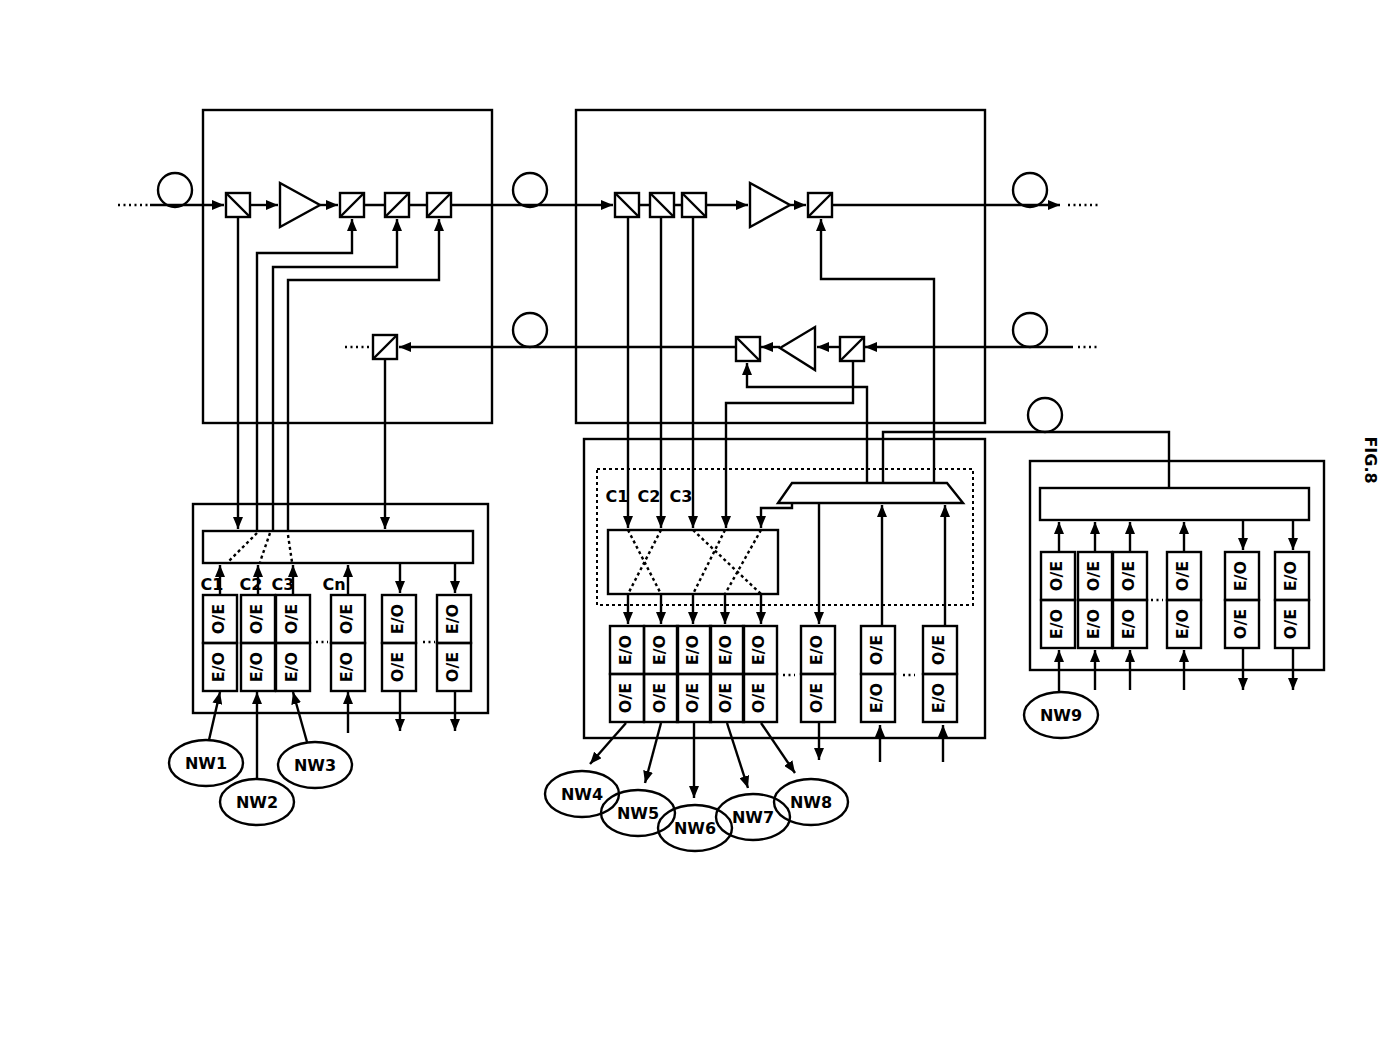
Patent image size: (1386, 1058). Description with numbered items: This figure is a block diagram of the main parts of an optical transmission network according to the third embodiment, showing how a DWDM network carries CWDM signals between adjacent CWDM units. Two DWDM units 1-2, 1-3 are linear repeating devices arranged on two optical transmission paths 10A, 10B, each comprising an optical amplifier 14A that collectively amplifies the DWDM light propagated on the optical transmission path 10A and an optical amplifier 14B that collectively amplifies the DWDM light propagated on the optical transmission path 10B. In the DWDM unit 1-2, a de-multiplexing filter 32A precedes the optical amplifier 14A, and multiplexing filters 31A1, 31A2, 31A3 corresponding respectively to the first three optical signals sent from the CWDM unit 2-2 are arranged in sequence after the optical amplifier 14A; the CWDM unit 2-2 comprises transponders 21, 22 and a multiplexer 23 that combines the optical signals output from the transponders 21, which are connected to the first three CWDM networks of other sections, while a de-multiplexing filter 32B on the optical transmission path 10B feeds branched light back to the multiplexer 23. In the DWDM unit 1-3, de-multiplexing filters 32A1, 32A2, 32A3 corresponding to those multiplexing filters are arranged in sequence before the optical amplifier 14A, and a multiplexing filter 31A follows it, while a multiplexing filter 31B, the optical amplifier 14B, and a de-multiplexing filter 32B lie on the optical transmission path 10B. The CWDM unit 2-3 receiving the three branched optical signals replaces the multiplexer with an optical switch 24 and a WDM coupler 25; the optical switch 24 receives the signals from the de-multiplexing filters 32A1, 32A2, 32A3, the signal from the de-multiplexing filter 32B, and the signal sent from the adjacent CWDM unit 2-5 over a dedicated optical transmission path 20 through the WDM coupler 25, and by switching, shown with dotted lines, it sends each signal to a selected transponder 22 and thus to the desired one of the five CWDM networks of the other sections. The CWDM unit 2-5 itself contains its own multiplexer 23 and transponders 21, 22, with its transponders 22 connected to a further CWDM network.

The DWDM unit 1-2 is at (368, 110).
The DWDM unit 1-3 is at (845, 110).
The CWDM unit 2-2 is at (408, 504).
The CWDM unit 2-3 is at (968, 740).
The CWDM unit 2-5 is at (1250, 461).
The optical transmission path 10A is at (176, 208).
The optical transmission path 10B is at (534, 348).
The dedicated optical transmission path 20 is at (1058, 403).
The optical amplifier 14A is at (300, 183).
The optical amplifier 14B is at (810, 327).
The multiplexing filter 31A is at (821, 193).
The multiplexing filter 31A1 is at (352, 193).
The multiplexing filter 31A2 is at (397, 193).
The multiplexing filter 31A3 is at (439, 193).
The multiplexing filter 31B is at (747, 337).
The de-multiplexing filter 32A is at (240, 193).
The de-multiplexing filter 32A1 is at (627, 193).
The de-multiplexing filter 32A2 is at (661, 193).
The de-multiplexing filter 32A3 is at (694, 193).
The de-multiplexing filter 32B is at (385, 335).
The transponder 21 is at (203, 605).
The transponder 22 is at (483, 653).
The multiplexer 23 is at (215, 531).
The optical switch 24 is at (606, 528).
The WDM coupler 25 is at (822, 483).